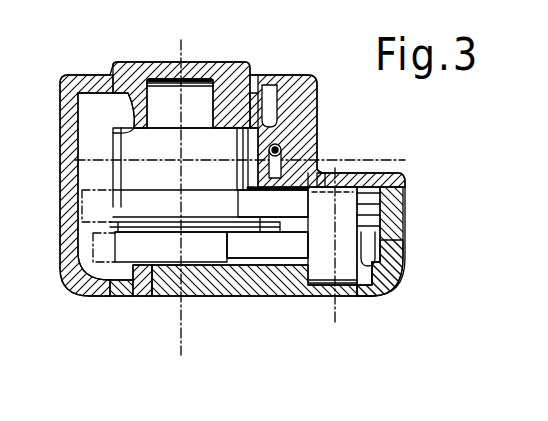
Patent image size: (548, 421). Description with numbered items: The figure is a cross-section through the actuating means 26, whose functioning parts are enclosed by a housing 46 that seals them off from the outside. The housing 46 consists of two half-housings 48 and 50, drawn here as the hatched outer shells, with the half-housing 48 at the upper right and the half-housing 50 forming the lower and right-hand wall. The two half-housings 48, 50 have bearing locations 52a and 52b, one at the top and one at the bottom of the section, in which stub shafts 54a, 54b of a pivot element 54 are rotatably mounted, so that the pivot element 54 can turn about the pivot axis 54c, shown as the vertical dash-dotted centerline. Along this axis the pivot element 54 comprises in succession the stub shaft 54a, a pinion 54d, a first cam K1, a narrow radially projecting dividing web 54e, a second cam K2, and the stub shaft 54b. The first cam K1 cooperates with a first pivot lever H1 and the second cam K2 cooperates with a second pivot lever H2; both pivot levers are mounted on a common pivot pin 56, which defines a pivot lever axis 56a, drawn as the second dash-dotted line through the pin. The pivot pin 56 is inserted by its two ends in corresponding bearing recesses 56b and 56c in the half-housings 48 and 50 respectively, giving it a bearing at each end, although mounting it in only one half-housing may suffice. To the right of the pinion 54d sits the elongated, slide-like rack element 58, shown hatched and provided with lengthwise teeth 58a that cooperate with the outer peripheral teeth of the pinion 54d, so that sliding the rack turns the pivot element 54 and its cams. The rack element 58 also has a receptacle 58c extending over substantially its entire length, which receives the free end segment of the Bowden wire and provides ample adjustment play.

The actuating means 26 is at (406, 154).
The housing 46 is at (407, 238).
The half-housing 48 is at (388, 178).
The half-housing 50 is at (397, 262).
The bearing location 52a is at (145, 83).
The bearing location 52b is at (146, 272).
The pivot element 54 is at (108, 170).
The stub shaft 54a is at (195, 100).
The stub shaft 54b is at (204, 270).
The pivot axis 54c is at (181, 349).
The pinion 54d is at (113, 135).
The dividing web 54e is at (116, 232).
The pivot pin 56 is at (350, 210).
The pivot lever axis 56a is at (337, 316).
The bearing recess 56b is at (374, 187).
The bearing recess 56c is at (385, 273).
The rack element 58 is at (286, 110).
The lengthwise teeth 58a is at (250, 78).
The receptacle 58c is at (283, 152).
The first pivot lever H1 is at (290, 192).
The second pivot lever H2 is at (268, 248).
The first cam K1 is at (200, 207).
The second cam K2 is at (192, 252).